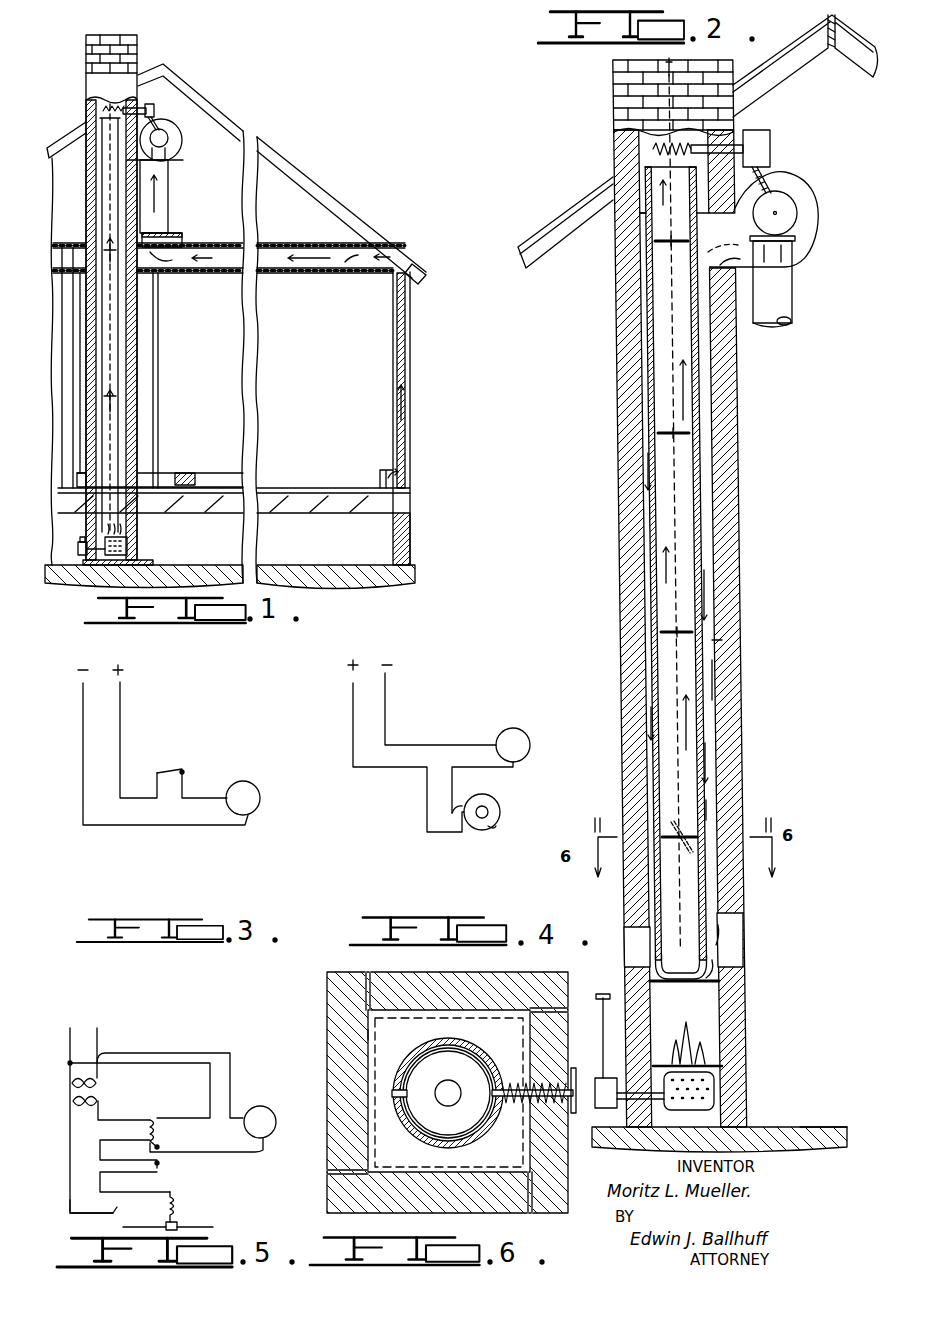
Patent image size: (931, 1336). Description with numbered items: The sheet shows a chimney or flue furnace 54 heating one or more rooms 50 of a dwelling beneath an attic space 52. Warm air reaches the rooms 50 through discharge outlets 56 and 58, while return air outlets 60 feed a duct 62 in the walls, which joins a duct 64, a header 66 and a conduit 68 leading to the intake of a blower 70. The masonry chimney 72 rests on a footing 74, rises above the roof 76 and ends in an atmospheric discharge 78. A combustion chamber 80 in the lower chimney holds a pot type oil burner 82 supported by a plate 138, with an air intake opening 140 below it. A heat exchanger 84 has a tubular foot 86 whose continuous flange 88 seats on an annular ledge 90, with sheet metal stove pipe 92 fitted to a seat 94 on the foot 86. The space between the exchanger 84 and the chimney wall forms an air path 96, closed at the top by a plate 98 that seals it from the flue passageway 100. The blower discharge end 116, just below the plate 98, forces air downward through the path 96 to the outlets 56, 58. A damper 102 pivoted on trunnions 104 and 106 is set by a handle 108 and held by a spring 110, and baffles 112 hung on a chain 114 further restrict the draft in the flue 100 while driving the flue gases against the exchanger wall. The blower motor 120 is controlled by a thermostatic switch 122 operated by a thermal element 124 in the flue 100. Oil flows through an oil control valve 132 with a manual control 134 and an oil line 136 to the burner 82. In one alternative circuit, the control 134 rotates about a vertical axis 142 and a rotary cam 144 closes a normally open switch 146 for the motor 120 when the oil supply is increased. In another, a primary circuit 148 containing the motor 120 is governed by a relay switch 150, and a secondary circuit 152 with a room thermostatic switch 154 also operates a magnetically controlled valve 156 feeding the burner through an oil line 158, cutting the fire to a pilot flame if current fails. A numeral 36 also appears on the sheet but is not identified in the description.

In FIG. 2, the flue pipe section 36 is at (745, 935).
In FIG. 1, the rooms 50 is at (60, 362).
In FIG. 1, the attic space 52 is at (203, 206).
In FIG. 1, the chimney or flue furnace 54 is at (159, 372).
In FIG. 2, the chimney or flue furnace 54 is at (746, 418).
In FIG. 1, the heated air discharge outlet 56 is at (178, 472).
In FIG. 1, the heated air discharge outlet 58 is at (76, 480).
In FIG. 2, the heated air discharge outlet 58 is at (638, 946).
In FIG. 1, the return air outlets 60 is at (197, 473).
In FIG. 1, the duct 62 is at (412, 402).
In FIG. 1, the duct 64 is at (334, 274).
In FIG. 1, the header 66 is at (183, 238).
In FIG. 1, the conduit 68 is at (169, 180).
In FIG. 2, the conduit 68 is at (793, 292).
In FIG. 1, the blower 70 is at (183, 139).
In FIG. 2, the blower 70 is at (810, 195).
In FIG. 2, the masonry chimney 72 is at (738, 648).
In FIG. 6, the masonry chimney 72 is at (540, 970).
In FIG. 2, the footing 74 is at (818, 1127).
In FIG. 2, the roof 76 is at (562, 210).
In FIG. 2, the atmospheric discharge 78 is at (612, 62).
In FIG. 2, the combustion chamber 80 is at (710, 1032).
In FIG. 2, the pot type oil burner 82 is at (722, 1098).
In FIG. 2, the heat exchanger 84 is at (702, 557).
In FIG. 2, the tubular foot 86 is at (720, 915).
In FIG. 6, the tubular foot 86 is at (440, 1042).
In FIG. 2, the continuous flange 88 is at (722, 964).
In FIG. 6, the continuous flange 88 is at (368, 1030).
In FIG. 2, the annular ledge 90 is at (720, 982).
In FIG. 2, the sheet metal stove pipe 92 is at (703, 730).
In FIG. 2, the seat 94 is at (705, 820).
In FIG. 2, the air path 96 is at (726, 502).
In FIG. 6, the air path 96 is at (444, 1168).
In FIG. 2, the plate 98 is at (643, 216).
In FIG. 2, the flue passageway 100 is at (725, 640).
In FIG. 2, the damper 102 is at (688, 830).
In FIG. 6, the damper 102 is at (440, 1122).
In FIG. 6, the trunnion 104 is at (392, 1090).
In FIG. 6, the trunnion 106 is at (498, 1085).
In FIG. 6, the handle 108 is at (576, 1120).
In FIG. 6, the spring 110 is at (460, 1118).
In FIG. 2, the baffles 112 is at (660, 244).
In FIG. 2, the chain 114 is at (658, 528).
In FIG. 2, the discharge end of blower 116 is at (733, 268).
In FIG. 2, the electric motor 120 is at (797, 216).
In FIG. 3, the electric motor 120 is at (250, 783).
In FIG. 4, the electric motor 120 is at (528, 735).
In FIG. 5, the electric motor 120 is at (272, 1108).
In FIG. 2, the thermostatic switch 122 is at (770, 140).
In FIG. 3, the thermostatic switch 122 is at (168, 774).
In FIG. 2, the thermal element 124 is at (650, 148).
In FIG. 2, the oil control valve 132 is at (598, 1102).
In FIG. 2, the manual control 134 is at (618, 990).
In FIG. 4, the manual control 134 is at (500, 811).
In FIG. 2, the oil line 136 is at (640, 1104).
In FIG. 2, the plate 138 is at (722, 1062).
In FIG. 2, the air intake opening 140 is at (734, 1128).
In FIG. 4, the vertical axis 142 is at (496, 826).
In FIG. 4, the rotary cam 144 is at (484, 793).
In FIG. 4, the normally open switch 146 is at (455, 817).
In FIG. 5, the primary circuit 148 is at (143, 1053).
In FIG. 5, the relay switch 150 is at (160, 1147).
In FIG. 5, the secondary circuit 152 is at (115, 1215).
In FIG. 5, the thermostatic switch 154 is at (164, 1166).
In FIG. 5, the magnetically controlled valve 156 is at (176, 1216).
In FIG. 5, the oil line 158 is at (214, 1227).